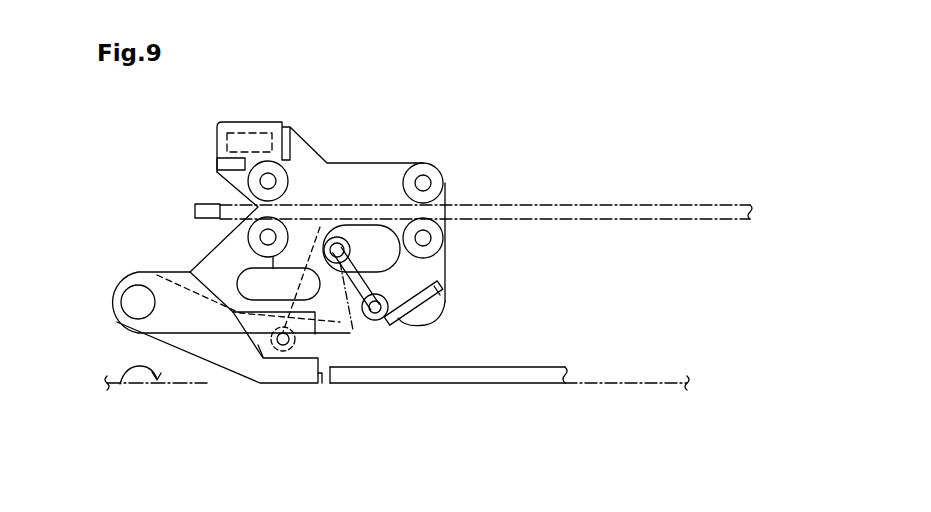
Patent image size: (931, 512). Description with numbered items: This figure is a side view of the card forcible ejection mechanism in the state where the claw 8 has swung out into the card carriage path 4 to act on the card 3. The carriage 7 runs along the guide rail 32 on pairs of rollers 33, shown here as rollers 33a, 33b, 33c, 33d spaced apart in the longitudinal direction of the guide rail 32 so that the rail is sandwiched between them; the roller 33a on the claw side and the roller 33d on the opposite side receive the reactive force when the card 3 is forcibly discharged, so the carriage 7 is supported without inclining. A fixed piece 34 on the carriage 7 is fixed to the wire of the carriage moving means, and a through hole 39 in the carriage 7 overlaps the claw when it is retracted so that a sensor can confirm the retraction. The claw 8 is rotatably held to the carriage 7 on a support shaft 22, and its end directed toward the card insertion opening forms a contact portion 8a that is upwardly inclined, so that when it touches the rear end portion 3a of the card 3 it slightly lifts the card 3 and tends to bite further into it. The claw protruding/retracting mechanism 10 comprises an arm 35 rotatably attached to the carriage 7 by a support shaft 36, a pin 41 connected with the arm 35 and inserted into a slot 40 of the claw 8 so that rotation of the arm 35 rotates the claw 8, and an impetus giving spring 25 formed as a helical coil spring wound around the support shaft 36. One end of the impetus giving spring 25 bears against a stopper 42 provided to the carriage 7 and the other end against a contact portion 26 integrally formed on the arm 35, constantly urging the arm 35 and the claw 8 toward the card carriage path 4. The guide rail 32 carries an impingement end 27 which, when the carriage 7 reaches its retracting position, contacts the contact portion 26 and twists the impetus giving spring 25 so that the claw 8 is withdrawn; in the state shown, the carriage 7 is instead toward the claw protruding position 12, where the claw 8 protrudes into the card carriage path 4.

The card 3 is at (488, 385).
The rear end portion 3a is at (338, 376).
The card carriage path 4 is at (118, 393).
The carriage 7 is at (386, 172).
The claw 8 is at (237, 360).
The contact portion 8a is at (320, 378).
The claw protruding/retracting mechanism 10 is at (565, 289).
The claw protruding position 12 is at (288, 400).
The support shaft 22 is at (133, 305).
The impetus giving spring 25 is at (432, 301).
The contact portion 26 is at (337, 237).
The impingement end 27 is at (345, 323).
The guide rail 32 is at (637, 207).
The rollers 33 is at (340, 199).
The roller 33a is at (252, 228).
The mounting hole 33b is at (250, 174).
The mounting hole 33c is at (441, 238).
The roller 33d is at (441, 173).
The fixed piece 34 is at (255, 130).
The arm 35 is at (365, 262).
The support shaft 36 is at (385, 313).
The through hole 39 is at (240, 280).
The slot 40 is at (262, 359).
The pin 41 is at (286, 352).
The stopper 42 is at (420, 307).